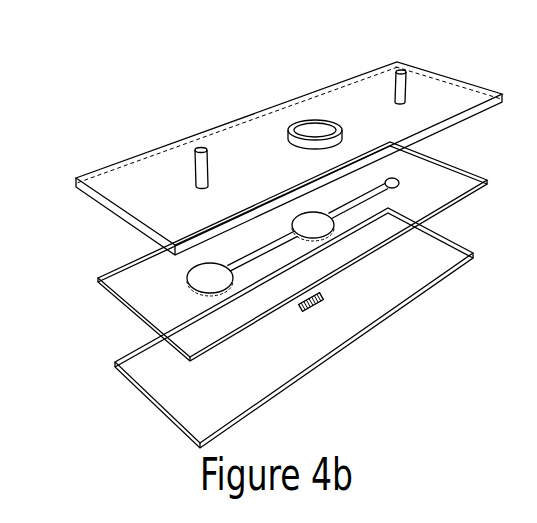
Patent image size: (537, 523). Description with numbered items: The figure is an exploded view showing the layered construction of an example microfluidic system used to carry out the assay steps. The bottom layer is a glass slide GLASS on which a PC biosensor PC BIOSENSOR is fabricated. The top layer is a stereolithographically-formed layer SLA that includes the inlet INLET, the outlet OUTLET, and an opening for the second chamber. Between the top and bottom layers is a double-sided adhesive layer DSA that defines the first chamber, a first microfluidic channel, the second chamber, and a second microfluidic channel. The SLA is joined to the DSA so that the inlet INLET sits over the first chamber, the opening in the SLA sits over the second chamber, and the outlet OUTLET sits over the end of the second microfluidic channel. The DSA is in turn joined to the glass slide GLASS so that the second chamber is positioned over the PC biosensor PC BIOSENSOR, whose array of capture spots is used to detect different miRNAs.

The stereolithographically-formed layer SLA is at (289, 158).
The inlet INLET is at (178, 154).
The outlet OUTLET is at (375, 77).
The double-sided adhesive layer DSA is at (287, 251).
The PC biosensor PC BIOSENSOR is at (331, 321).
The glass slide GLASS is at (280, 328).